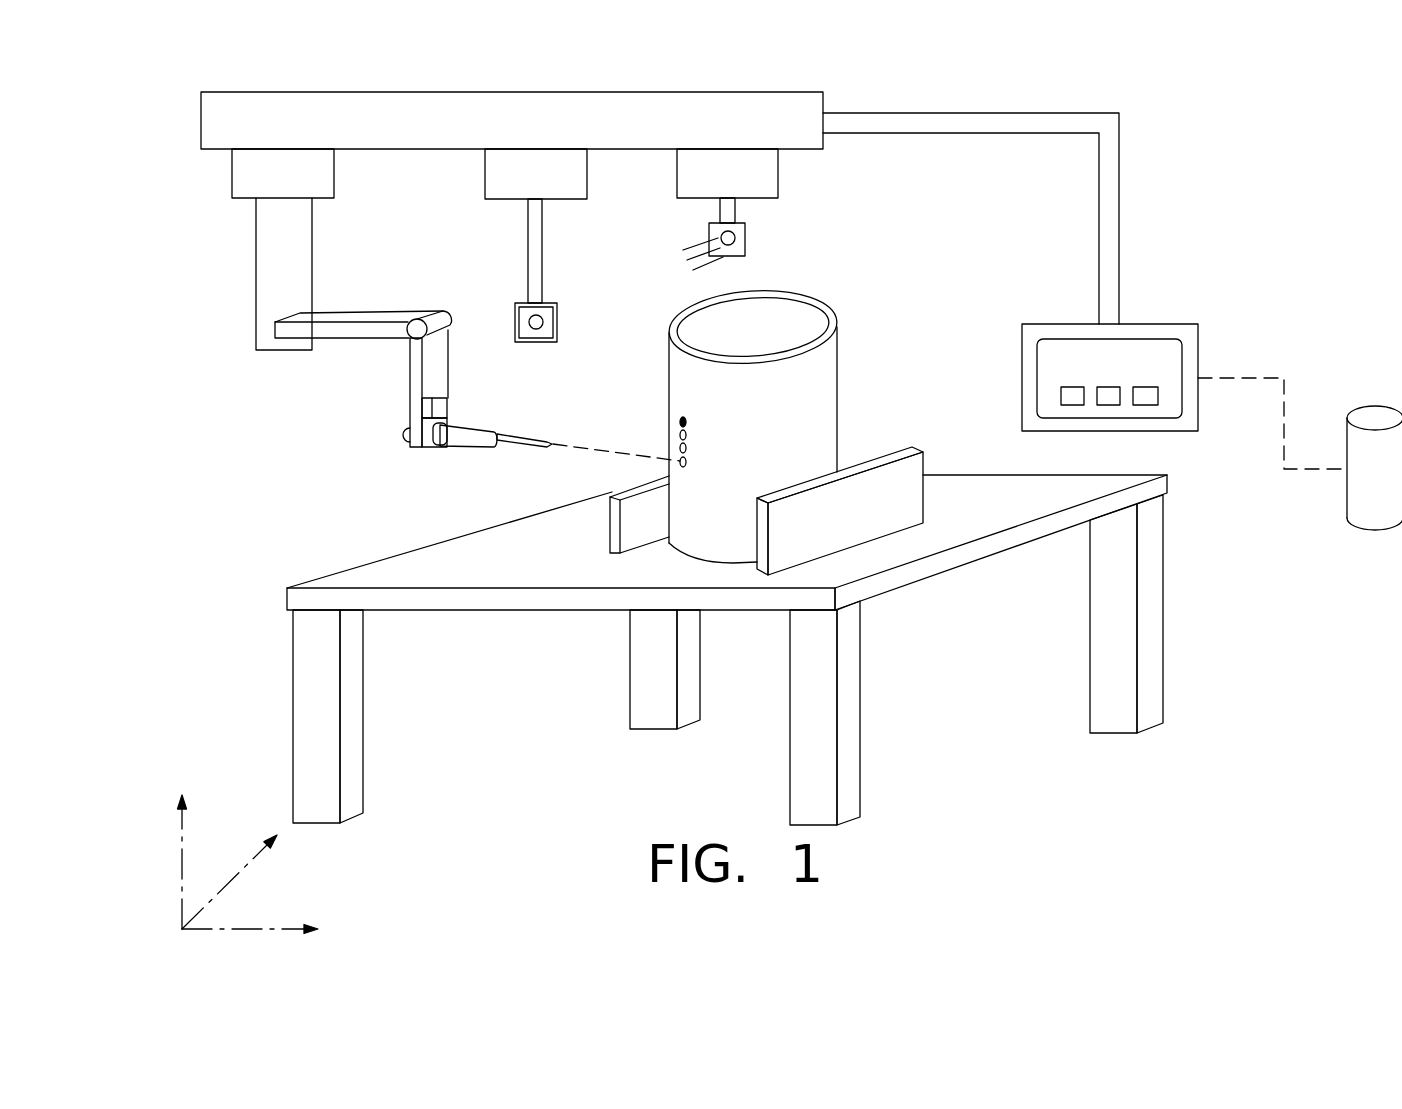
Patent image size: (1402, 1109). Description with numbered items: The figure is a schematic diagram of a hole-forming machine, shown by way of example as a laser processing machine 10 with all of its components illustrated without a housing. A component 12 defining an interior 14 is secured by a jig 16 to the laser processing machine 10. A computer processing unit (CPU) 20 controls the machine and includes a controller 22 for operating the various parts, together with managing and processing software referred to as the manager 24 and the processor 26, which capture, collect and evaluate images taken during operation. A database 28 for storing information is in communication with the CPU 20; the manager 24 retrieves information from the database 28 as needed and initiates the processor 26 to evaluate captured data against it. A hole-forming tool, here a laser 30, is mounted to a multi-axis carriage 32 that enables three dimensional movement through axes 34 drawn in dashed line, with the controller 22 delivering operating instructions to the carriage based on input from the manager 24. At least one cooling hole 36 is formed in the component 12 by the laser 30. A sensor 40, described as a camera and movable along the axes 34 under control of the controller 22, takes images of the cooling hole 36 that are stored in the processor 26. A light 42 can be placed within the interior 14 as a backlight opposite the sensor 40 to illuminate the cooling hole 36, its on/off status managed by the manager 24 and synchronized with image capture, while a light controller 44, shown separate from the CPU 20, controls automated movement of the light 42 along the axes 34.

The laser processing machine 10 is at (765, 483).
The component 12 is at (754, 424).
The interior 14 is at (780, 318).
The jig 16 is at (857, 513).
The computer processing unit (CPU) 20 is at (1139, 385).
The controller 22 is at (1073, 400).
The manager 24 is at (1107, 397).
The processor 26 is at (1145, 395).
The database 28 is at (1360, 488).
The laser 30 is at (430, 448).
The multi-axis carriage 32 is at (371, 318).
The axes 34 is at (155, 843).
The cooling hole 36 is at (683, 418).
The sensor 40 is at (547, 312).
The light 42 is at (742, 232).
The light controller 44 is at (778, 182).